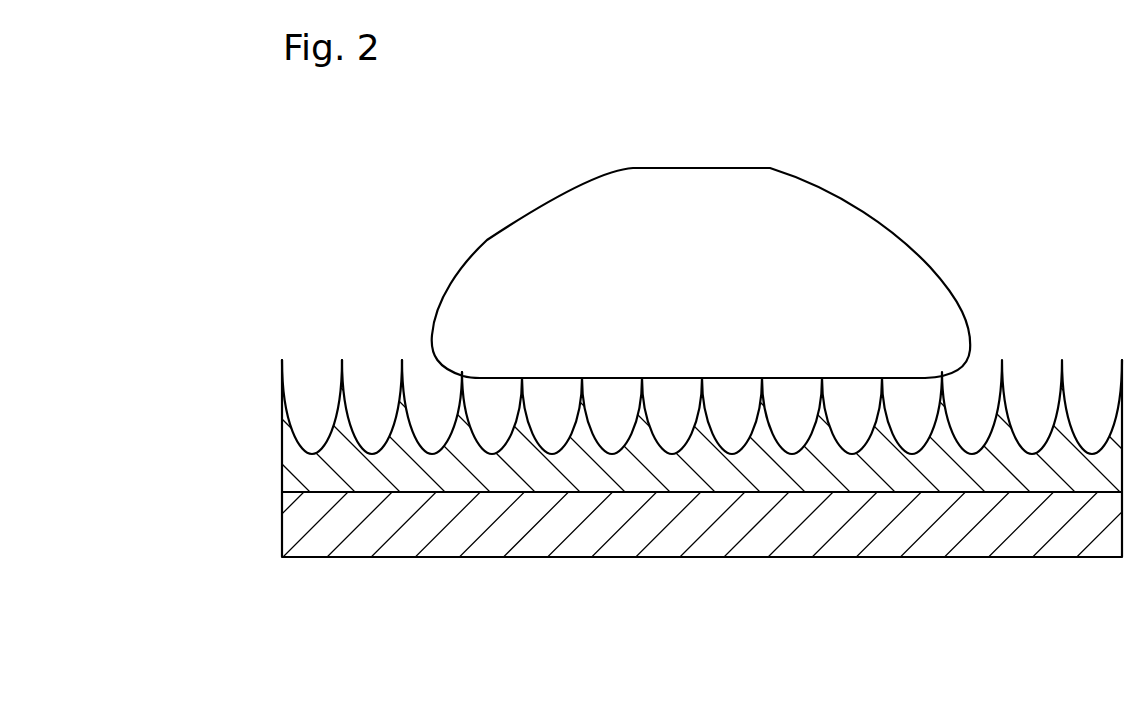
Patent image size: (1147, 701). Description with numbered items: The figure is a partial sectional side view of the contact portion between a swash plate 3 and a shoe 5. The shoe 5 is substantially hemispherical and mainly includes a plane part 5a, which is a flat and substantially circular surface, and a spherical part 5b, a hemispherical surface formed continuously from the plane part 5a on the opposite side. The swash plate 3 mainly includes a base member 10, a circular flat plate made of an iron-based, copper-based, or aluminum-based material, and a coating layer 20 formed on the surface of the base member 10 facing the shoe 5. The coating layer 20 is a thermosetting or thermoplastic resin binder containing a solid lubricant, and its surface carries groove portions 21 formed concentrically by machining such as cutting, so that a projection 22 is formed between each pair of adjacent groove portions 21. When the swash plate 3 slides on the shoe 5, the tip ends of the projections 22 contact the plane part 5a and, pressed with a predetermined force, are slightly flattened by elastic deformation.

The swash plate 3 is at (636, 451).
The shoe 5 is at (701, 253).
The plane part 5a is at (612, 392).
The spherical part 5b is at (540, 218).
The base member 10 is at (282, 527).
The coating layer 20 is at (636, 365).
The groove portion 21 is at (368, 451).
The projection 22 is at (402, 360).